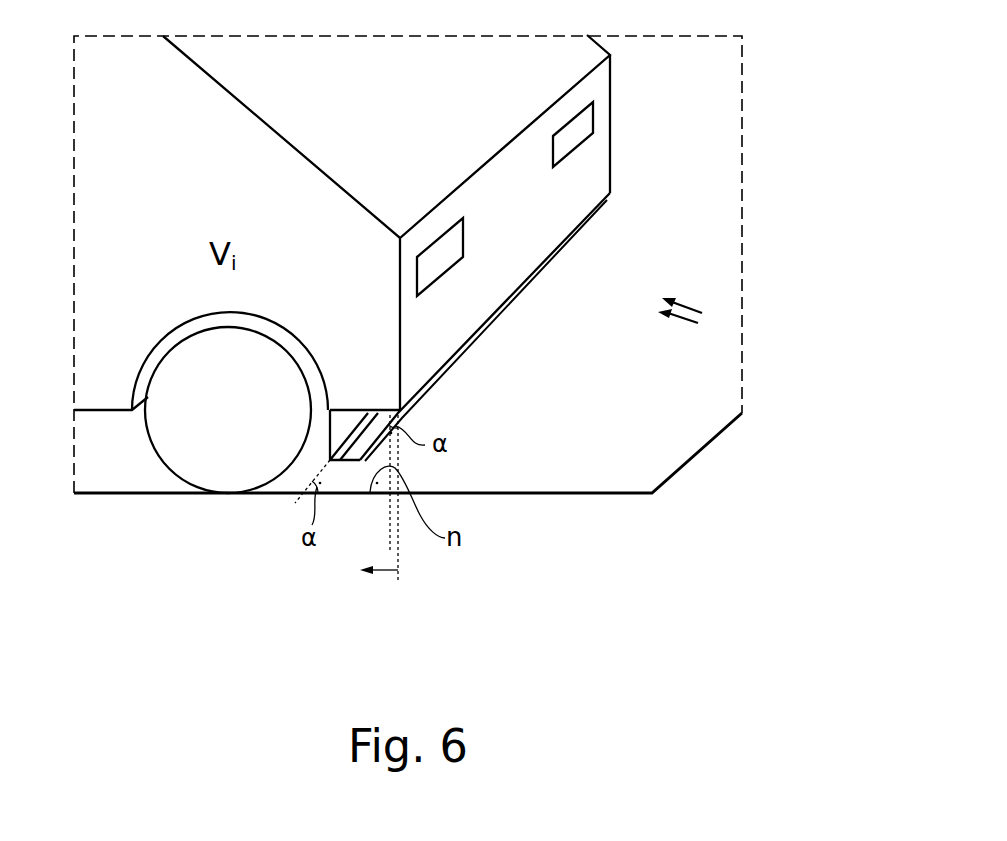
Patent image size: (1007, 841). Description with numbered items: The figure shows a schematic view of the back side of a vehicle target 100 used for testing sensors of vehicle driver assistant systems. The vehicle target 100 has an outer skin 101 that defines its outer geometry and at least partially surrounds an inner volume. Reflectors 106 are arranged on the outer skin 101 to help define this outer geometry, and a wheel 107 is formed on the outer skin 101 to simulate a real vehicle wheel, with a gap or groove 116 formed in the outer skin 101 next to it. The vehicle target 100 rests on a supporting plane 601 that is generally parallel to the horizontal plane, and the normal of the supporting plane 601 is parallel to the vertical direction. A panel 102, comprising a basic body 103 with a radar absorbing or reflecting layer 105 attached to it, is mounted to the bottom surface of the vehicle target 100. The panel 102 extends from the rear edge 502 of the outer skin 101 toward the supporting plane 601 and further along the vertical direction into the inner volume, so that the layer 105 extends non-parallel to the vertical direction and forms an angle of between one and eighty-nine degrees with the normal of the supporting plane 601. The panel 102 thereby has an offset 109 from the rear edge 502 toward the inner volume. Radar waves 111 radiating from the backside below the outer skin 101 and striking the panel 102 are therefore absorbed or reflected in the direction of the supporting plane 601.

The vehicle target 100 is at (652, 151).
The outer skin 101 is at (610, 87).
The panel 102 is at (498, 315).
The basic body 103 is at (356, 455).
The radar absorbing or reflecting layer 105 is at (328, 457).
The reflectors 106 is at (568, 138).
The wheels 107 is at (193, 453).
The offset 109 is at (387, 572).
The radar waves 111 is at (683, 322).
The gap or groove 116 is at (142, 410).
The rear edge 502 is at (532, 272).
The supporting plane 601 is at (628, 490).